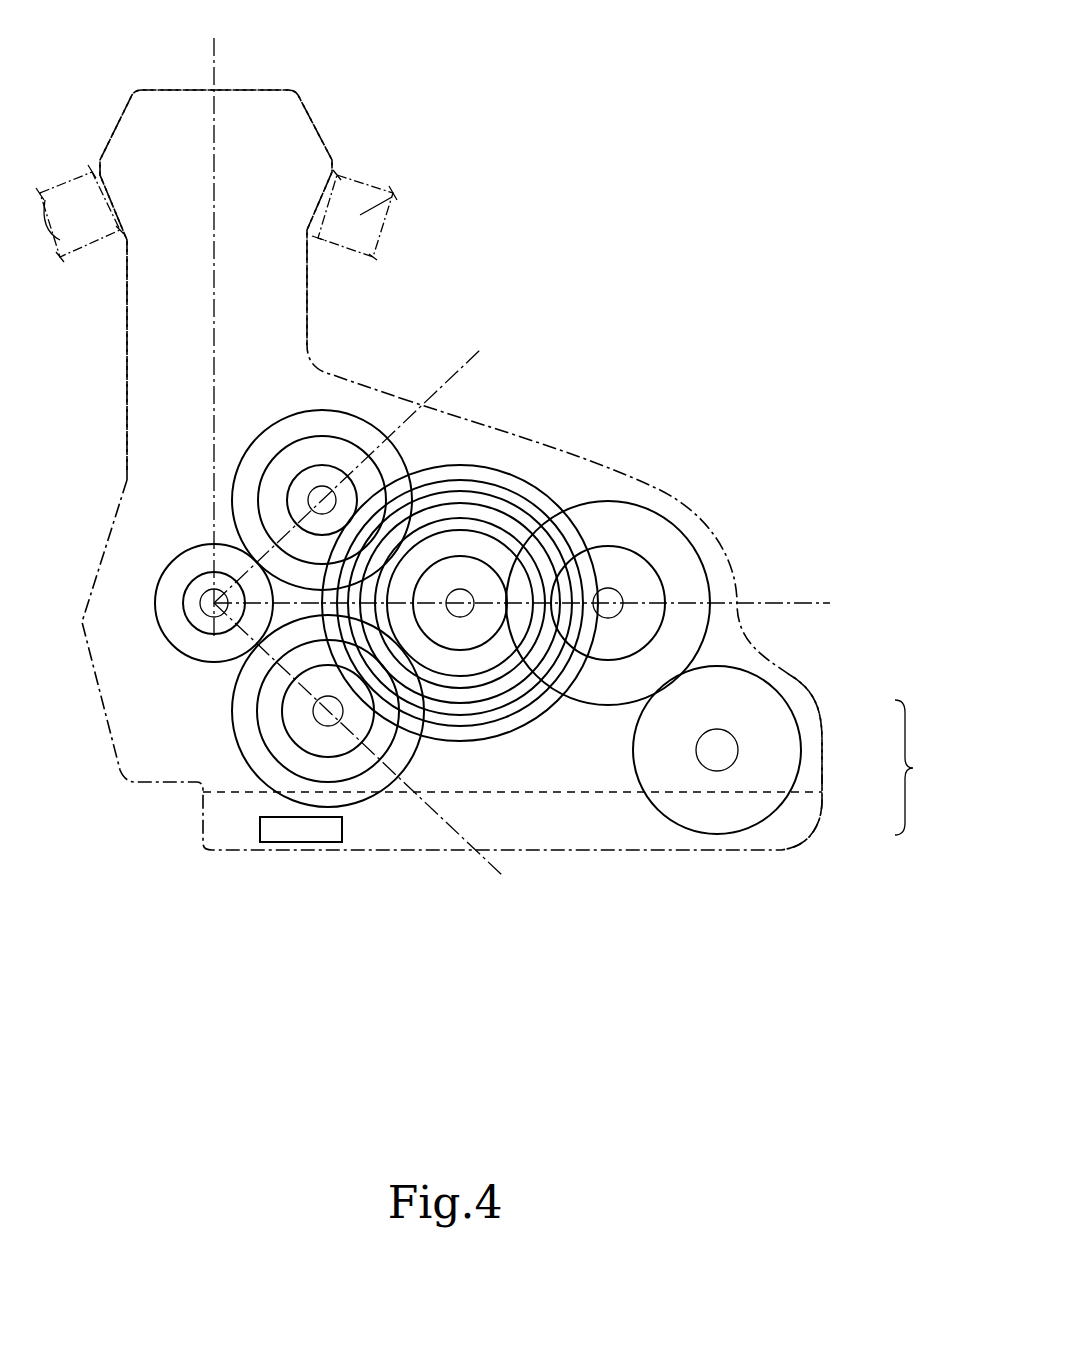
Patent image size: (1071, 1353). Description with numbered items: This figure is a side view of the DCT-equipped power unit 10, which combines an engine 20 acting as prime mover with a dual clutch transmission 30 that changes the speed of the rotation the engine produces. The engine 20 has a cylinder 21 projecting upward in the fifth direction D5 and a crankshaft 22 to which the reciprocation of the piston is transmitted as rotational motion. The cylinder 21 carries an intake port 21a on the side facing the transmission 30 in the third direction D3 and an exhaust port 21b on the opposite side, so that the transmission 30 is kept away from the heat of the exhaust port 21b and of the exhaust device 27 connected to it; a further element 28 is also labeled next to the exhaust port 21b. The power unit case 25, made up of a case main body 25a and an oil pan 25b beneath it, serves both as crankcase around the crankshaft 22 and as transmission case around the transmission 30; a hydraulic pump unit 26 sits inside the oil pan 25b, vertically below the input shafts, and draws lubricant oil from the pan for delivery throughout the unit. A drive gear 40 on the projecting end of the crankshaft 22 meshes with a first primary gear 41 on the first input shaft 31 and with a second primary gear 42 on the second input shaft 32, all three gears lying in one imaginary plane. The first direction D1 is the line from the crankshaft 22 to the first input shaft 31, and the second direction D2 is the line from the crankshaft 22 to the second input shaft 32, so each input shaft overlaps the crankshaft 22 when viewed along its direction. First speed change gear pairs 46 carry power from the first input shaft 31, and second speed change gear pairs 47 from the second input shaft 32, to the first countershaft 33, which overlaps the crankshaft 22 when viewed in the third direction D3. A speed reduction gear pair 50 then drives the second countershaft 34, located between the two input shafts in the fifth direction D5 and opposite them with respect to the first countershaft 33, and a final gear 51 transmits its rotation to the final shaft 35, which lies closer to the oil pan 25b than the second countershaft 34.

The DCT-equipped power unit 10 is at (580, 262).
The engine 20 is at (124, 405).
The cylinder 21 is at (127, 360).
The intake port 21a is at (332, 188).
The exhaust port 21b is at (88, 197).
The crankshaft 22 is at (200, 600).
The power unit case 25 is at (926, 767).
The case main body 25a is at (803, 686).
The oil pan 25b is at (805, 845).
The hydraulic pump unit 26 is at (265, 822).
The exhaust device 27 is at (392, 197).
The mounting portion 28 is at (60, 240).
The dual clutch transmission 30 is at (578, 458).
The first input shaft 31 is at (322, 487).
The second input shaft 32 is at (340, 725).
The first countershaft 33 is at (462, 590).
The second countershaft 34 is at (608, 590).
The final shaft 35 is at (720, 765).
The drive gear 40 is at (178, 650).
The first primary gear 41 is at (283, 413).
The second primary gear 42 is at (235, 742).
The first speed change gear pairs 46 is at (370, 420).
The second speed change gear pairs 47 is at (345, 728).
The speed reduction gear pair 50 is at (700, 545).
The final gear 51 is at (672, 822).
The first direction D1 is at (460, 360).
The second direction D2 is at (485, 865).
The third direction D3 is at (812, 600).
The fifth direction D5 is at (217, 62).